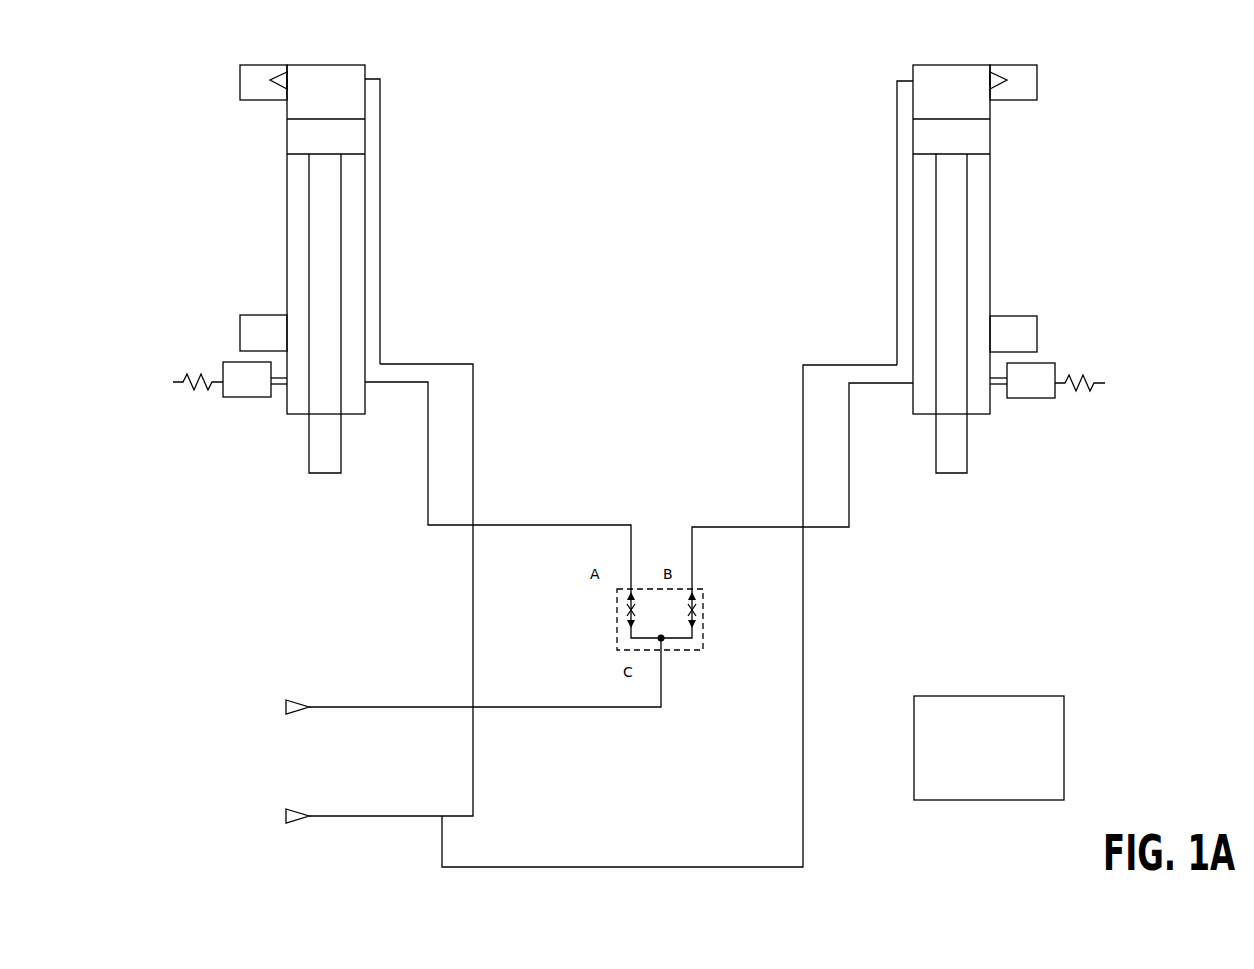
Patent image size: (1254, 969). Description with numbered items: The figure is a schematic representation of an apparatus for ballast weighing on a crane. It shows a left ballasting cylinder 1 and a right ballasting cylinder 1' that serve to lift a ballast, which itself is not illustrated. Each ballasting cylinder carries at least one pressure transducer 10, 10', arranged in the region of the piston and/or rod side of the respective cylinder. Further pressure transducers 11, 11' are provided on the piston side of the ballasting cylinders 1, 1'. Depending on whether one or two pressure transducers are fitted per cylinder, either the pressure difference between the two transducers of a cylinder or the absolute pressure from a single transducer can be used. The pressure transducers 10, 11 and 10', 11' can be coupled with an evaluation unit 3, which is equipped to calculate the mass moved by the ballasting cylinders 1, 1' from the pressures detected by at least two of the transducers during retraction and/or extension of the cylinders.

The left ballasting cylinder 1 is at (300, 269).
The right ballasting cylinder 1' is at (980, 269).
The pressure transducer 10 is at (225, 327).
The pressure transducer 10' is at (1054, 328).
The further pressure transducer 11 is at (225, 75).
The further pressure transducer 11' is at (1038, 83).
The evaluation unit 3 is at (996, 760).